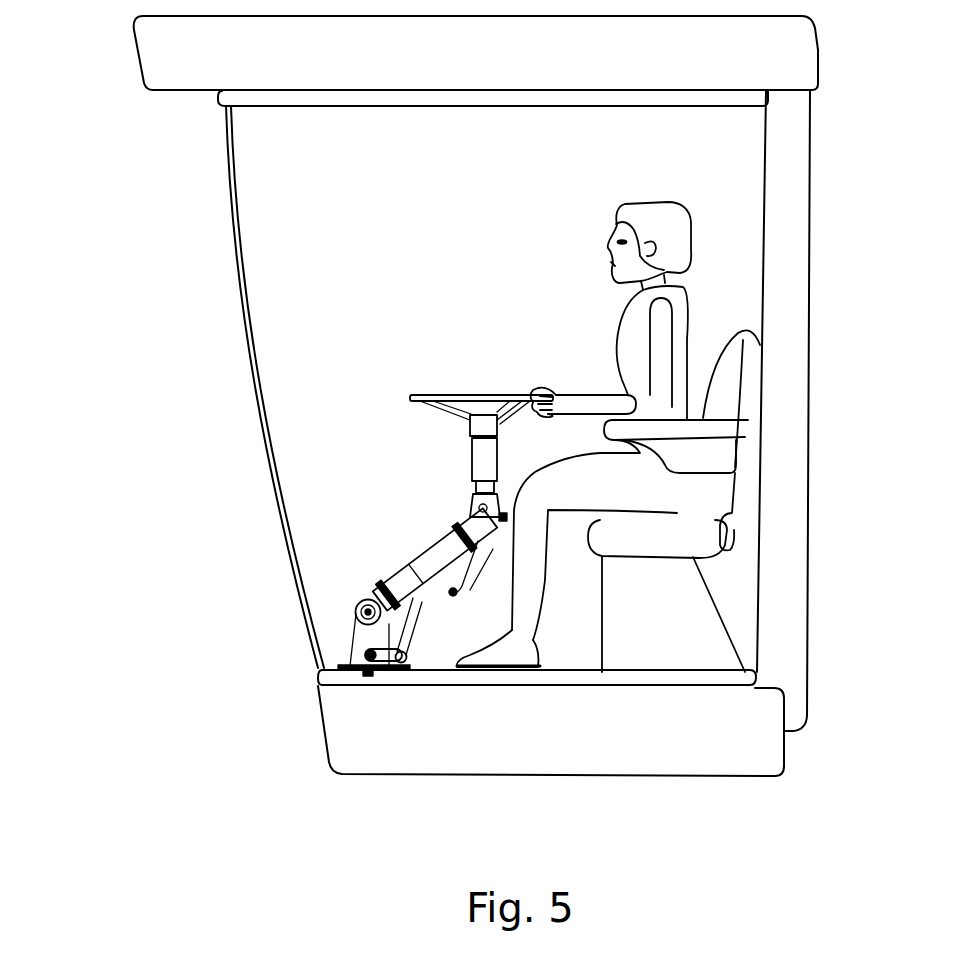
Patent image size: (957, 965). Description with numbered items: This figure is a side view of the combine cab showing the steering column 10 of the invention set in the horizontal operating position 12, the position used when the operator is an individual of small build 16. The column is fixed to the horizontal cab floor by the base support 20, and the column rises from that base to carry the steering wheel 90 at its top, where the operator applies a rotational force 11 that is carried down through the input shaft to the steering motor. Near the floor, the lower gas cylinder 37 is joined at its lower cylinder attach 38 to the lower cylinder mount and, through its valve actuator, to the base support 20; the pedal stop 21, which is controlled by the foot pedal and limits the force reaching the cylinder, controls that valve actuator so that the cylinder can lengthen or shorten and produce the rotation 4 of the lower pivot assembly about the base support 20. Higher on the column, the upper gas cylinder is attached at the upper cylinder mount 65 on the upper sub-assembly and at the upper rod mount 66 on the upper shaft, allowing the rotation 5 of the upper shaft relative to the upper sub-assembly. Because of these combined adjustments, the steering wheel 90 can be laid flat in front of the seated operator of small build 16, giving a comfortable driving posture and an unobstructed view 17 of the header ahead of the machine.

The rotation of the lower pivot assembly 4 is at (358, 612).
The rotation of the upper shaft 5 is at (473, 518).
The steering column 10 is at (381, 398).
The rotational force 11 is at (463, 361).
The horizontal operating position for a small individual 12 is at (480, 478).
The operator of small build 16 is at (688, 312).
The unobstructed view 17 is at (607, 240).
The base support 20 is at (367, 637).
The pedal stop 21 is at (382, 668).
The lower gas cylinder 37 is at (412, 626).
The lower cylinder attach 38 is at (423, 600).
The upper cylinder mount 65 is at (456, 592).
The upper rod mount 66 is at (507, 517).
The steering wheel 90 is at (412, 399).